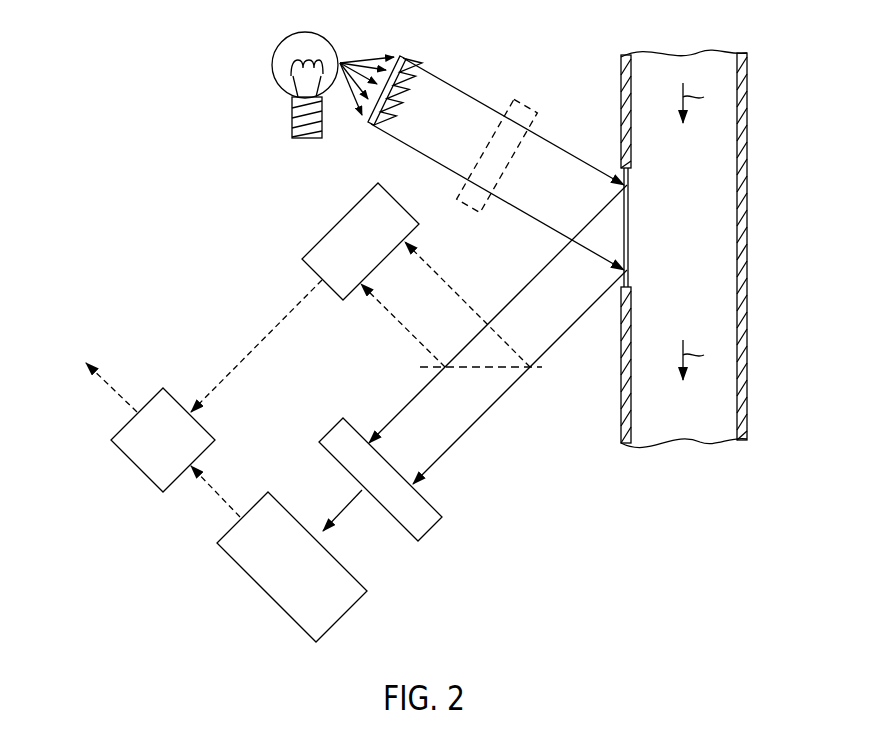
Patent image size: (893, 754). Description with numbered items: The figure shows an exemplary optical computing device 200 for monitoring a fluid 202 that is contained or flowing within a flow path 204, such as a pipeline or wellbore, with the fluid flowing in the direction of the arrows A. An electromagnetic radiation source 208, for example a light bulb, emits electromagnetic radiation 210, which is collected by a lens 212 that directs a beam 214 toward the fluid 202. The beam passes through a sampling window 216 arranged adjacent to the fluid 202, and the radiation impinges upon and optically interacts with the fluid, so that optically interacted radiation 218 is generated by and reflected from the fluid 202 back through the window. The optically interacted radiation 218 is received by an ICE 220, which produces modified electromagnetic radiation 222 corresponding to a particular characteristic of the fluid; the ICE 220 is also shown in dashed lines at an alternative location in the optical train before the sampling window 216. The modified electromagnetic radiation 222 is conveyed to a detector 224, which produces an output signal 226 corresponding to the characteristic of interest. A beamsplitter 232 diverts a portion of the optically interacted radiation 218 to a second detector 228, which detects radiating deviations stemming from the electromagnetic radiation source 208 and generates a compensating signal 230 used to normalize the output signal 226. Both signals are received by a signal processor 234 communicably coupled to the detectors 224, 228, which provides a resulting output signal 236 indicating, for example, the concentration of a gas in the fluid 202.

The optical computing device 200 is at (205, 207).
The fluid 202 is at (706, 247).
The flow path 204 is at (742, 108).
The electromagnetic radiation source 208 is at (272, 63).
The electromagnetic radiation 210 is at (368, 58).
The lens 212 is at (405, 60).
The beam 214 is at (467, 96).
The sampling window 216 is at (630, 176).
The optically interacted radiation 218 is at (447, 450).
The ICE 220 is at (468, 203).
The modified electromagnetic radiation 222 is at (348, 515).
The detector 224 is at (340, 612).
The output signal 226 is at (218, 495).
The second detector 228 is at (350, 211).
The compensating signal 230 is at (258, 343).
The beamsplitter 232 is at (462, 368).
The signal processor 234 is at (130, 460).
The resulting output signal 236 is at (110, 388).